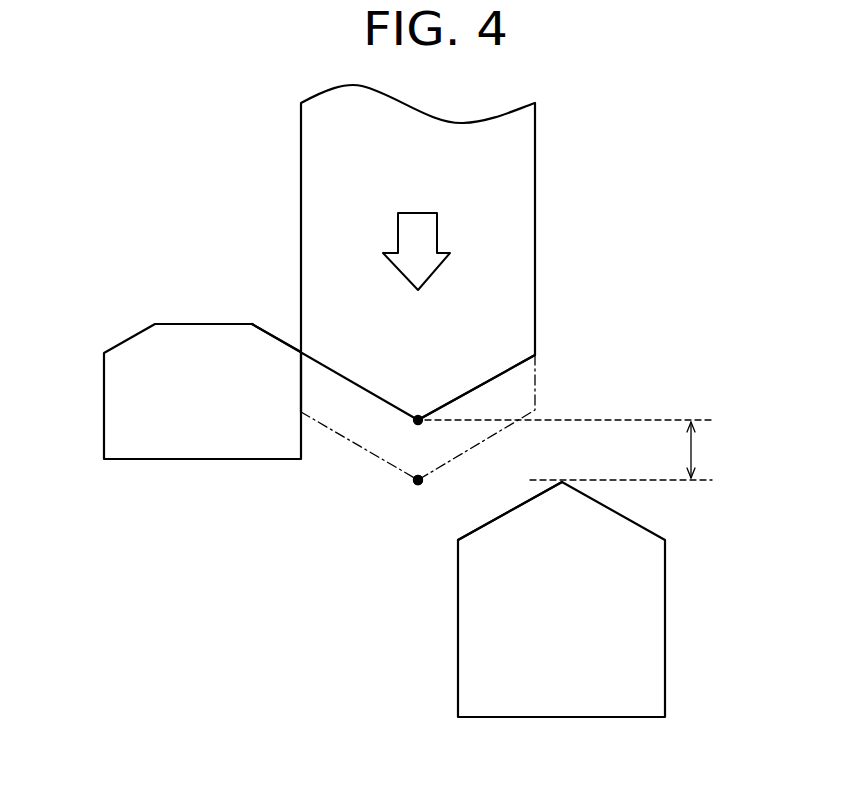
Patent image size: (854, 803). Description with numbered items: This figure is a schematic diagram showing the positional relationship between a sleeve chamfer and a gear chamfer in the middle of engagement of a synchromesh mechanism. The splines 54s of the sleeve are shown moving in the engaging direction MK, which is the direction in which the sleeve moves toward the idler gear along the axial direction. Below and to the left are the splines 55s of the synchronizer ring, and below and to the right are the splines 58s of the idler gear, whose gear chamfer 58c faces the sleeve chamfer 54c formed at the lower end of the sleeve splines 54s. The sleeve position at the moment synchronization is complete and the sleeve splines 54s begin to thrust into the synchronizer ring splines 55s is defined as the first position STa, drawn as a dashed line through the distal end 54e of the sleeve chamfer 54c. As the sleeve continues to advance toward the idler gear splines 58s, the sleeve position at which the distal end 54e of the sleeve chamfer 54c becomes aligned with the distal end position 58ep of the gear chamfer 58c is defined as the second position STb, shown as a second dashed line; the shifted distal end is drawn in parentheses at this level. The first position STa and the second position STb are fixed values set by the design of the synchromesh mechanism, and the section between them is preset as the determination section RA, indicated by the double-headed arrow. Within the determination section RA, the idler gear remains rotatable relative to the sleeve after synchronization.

The splines of the sleeve 54s is at (536, 231).
The sleeve chamfer 54c is at (524, 362).
The distal end of the sleeve chamfer 54e is at (412, 486).
The splines of the synchronizer ring 55s is at (103, 405).
The distal end position of the gear chamfer 58ep is at (424, 480).
The gear chamfer 58c is at (497, 514).
The splines of the idler gear 58s is at (457, 628).
The first position STa is at (595, 420).
The second position STb is at (647, 480).
The determination section RA is at (688, 450).
The engaging direction MK is at (416, 251).